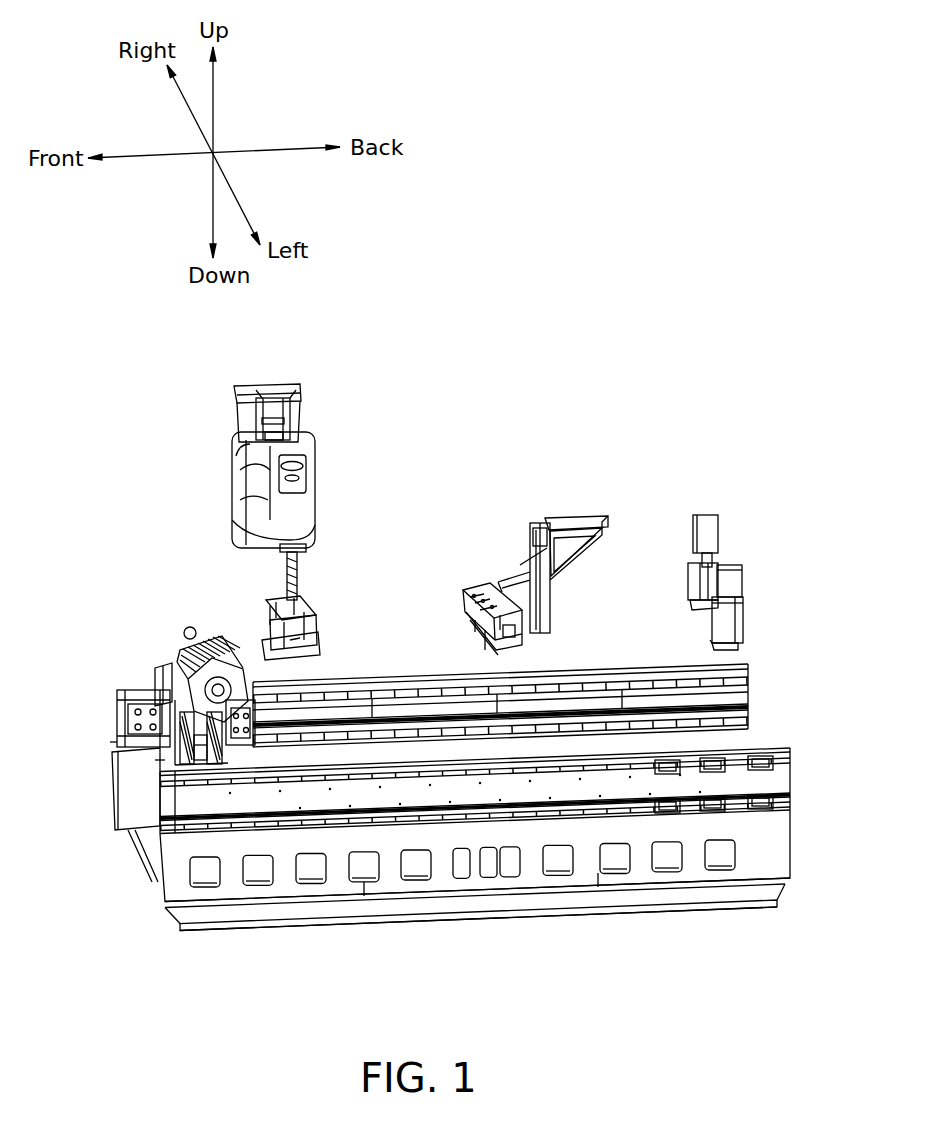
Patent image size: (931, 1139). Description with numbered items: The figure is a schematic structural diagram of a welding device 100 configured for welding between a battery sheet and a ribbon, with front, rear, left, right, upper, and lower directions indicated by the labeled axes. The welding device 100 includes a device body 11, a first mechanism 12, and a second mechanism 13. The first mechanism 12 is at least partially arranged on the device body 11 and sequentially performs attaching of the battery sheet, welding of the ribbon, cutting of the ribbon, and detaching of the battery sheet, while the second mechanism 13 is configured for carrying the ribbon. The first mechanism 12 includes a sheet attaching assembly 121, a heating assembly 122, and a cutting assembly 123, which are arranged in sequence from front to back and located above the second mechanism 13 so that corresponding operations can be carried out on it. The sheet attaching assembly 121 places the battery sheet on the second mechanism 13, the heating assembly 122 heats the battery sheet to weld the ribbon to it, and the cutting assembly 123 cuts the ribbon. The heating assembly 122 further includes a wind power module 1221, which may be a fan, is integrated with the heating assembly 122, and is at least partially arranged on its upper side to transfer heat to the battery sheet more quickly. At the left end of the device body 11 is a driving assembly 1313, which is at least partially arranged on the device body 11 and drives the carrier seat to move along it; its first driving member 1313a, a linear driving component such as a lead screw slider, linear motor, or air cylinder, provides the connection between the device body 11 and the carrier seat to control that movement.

The welding device 100 is at (560, 355).
The device body 11 is at (292, 895).
The first mechanism 12 is at (652, 458).
The sheet attaching assembly 121 is at (303, 443).
The heating assembly 122 is at (530, 524).
The wind power module 1221 is at (477, 590).
The cutting assembly 123 is at (700, 540).
The second mechanism 13 is at (180, 648).
The driving assembly 1313 is at (164, 752).
The first driving member 1313a is at (228, 770).